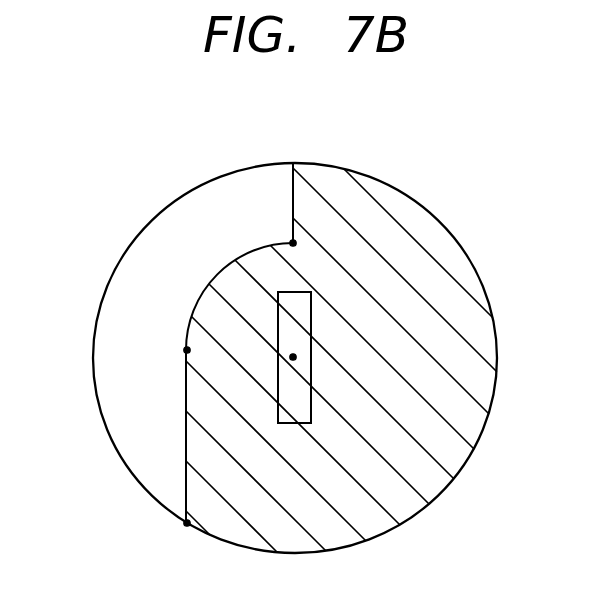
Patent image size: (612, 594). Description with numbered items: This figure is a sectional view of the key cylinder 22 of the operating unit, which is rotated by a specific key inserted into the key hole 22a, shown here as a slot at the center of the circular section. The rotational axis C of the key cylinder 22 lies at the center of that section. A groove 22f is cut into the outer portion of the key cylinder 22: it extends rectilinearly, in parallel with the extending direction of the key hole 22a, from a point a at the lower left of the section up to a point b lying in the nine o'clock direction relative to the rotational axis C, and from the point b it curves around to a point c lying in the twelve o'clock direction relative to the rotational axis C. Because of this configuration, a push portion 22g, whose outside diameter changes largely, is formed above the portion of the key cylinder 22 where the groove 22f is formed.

The key cylinder 22 is at (497, 380).
The key hole 22a is at (300, 403).
The groove 22f is at (187, 383).
The push portion 22g is at (291, 179).
The rotational axis C is at (296, 357).
The point a is at (187, 524).
The point b is at (187, 350).
The point c is at (292, 243).